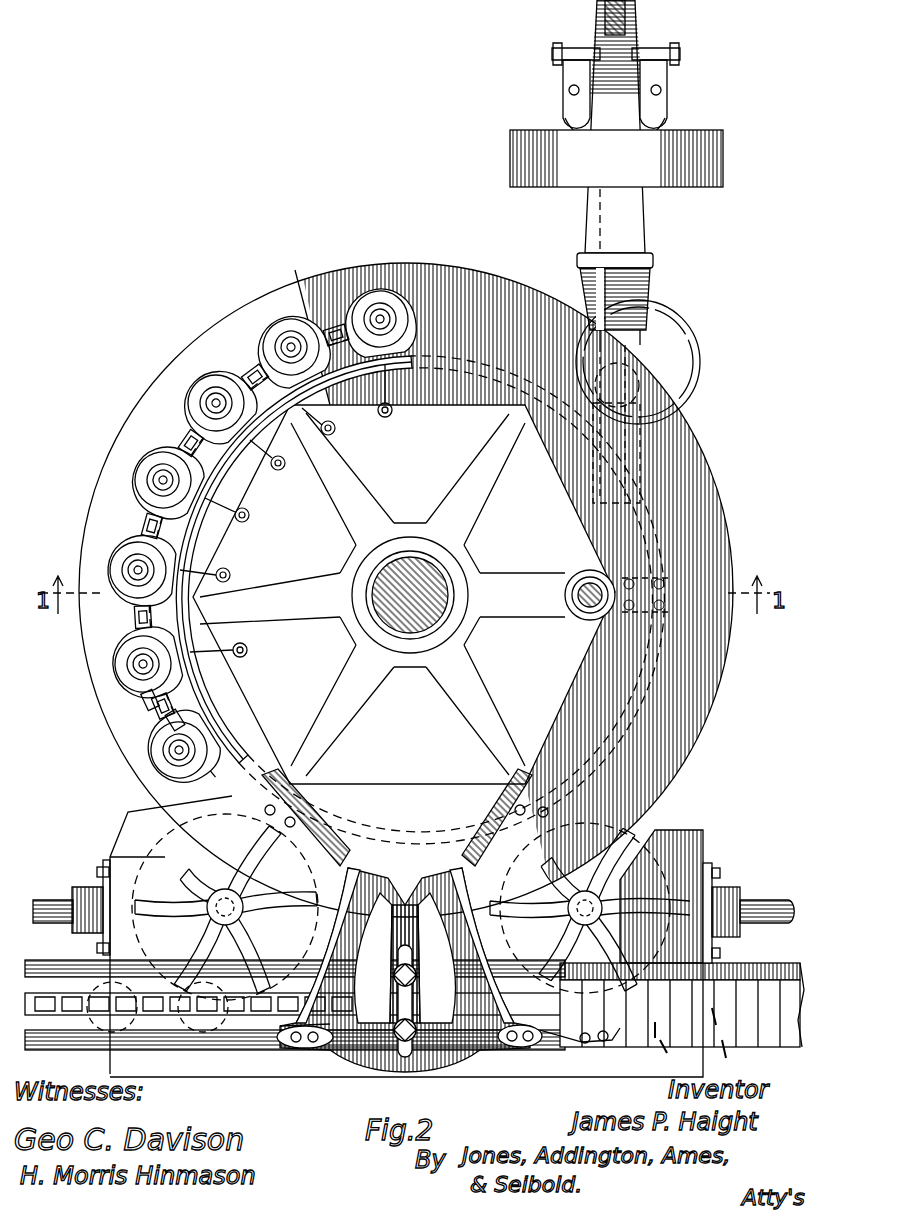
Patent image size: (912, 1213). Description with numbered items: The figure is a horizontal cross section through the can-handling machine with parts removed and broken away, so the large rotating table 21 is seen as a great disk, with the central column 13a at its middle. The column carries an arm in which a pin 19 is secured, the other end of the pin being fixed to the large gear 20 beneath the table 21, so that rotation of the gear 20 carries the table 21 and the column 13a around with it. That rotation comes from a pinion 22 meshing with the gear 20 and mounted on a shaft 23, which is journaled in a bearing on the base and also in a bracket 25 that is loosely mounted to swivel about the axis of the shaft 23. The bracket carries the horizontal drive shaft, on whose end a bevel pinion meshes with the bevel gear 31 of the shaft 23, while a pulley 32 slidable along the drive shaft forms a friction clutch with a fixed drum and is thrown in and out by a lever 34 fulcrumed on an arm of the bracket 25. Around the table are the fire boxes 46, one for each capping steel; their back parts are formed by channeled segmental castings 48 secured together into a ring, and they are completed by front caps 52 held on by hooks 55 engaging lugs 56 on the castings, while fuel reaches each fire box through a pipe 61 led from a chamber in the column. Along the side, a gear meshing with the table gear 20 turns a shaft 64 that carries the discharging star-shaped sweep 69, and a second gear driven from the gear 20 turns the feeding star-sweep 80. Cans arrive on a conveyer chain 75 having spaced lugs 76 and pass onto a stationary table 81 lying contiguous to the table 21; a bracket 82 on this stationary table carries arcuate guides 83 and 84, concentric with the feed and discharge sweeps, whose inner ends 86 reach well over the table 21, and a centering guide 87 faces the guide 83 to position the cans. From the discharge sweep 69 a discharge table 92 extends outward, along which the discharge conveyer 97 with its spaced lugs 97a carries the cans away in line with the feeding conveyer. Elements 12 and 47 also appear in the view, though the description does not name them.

The central shaft 12 is at (447, 582).
The central column 13a is at (447, 548).
The pin 19 is at (578, 606).
The large gear 20 is at (485, 692).
The table 21 is at (722, 506).
The pinion 22 is at (660, 362).
The shaft 23 is at (640, 386).
The bracket 25 is at (650, 276).
The bevel gear 31 is at (672, 320).
The pulley 32 is at (724, 158).
The lever 34 is at (646, 13).
The fire box 46 is at (190, 722).
The bottle holder 47 is at (242, 372).
The segmental castings 48 is at (382, 417).
The front caps 52 is at (118, 680).
The hooks 55 is at (140, 642).
The lugs 56 is at (150, 702).
The pipes 61 is at (248, 485).
The shaft 64 is at (600, 902).
The discharging star-shaped sweep 69 is at (640, 834).
The conveyer chain 75 is at (57, 993).
The spaced lugs 76 is at (167, 993).
The feeding star-sweep 80 is at (225, 907).
The stationary table 81 is at (520, 1056).
The bracket 82 is at (455, 1056).
The arcuate guide 83 is at (290, 1050).
The arcuate guide 84 is at (578, 1050).
The inner ends 86 is at (282, 780).
The centering guide 87 is at (158, 850).
The discharge table 92 is at (784, 964).
The discharge conveyer 97 is at (666, 1052).
The spaced lugs 97a is at (720, 1045).